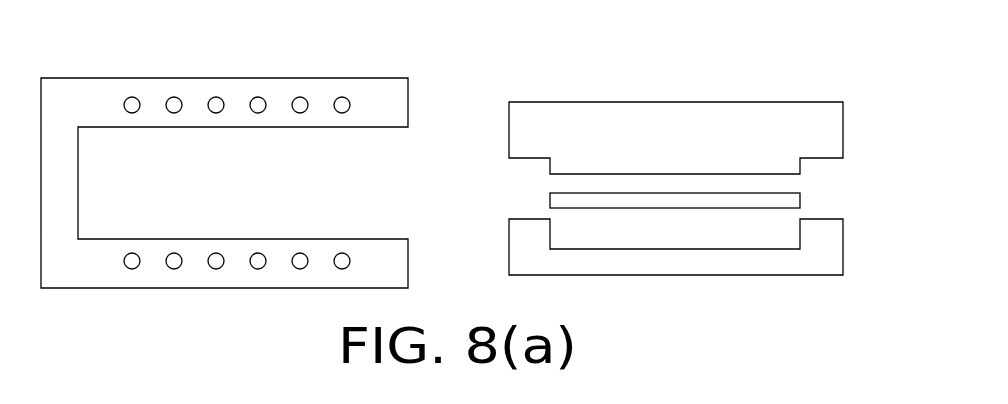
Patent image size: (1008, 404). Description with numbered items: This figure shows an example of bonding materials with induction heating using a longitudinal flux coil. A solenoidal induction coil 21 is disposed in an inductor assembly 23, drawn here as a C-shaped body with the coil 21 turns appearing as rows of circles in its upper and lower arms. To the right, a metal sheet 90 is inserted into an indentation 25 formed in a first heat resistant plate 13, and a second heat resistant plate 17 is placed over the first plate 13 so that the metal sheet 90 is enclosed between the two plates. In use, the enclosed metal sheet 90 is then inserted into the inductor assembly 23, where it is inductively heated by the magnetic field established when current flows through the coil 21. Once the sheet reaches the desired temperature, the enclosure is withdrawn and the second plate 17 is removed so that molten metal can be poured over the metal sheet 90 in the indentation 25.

The inductor assembly 23 is at (87, 105).
The solenoidal induction coil 21 is at (343, 100).
The second heat resistant plate 17 is at (783, 116).
The metal sheet 90 is at (785, 200).
The first heat resistant plate 13 is at (830, 253).
The indentation 25 is at (579, 237).